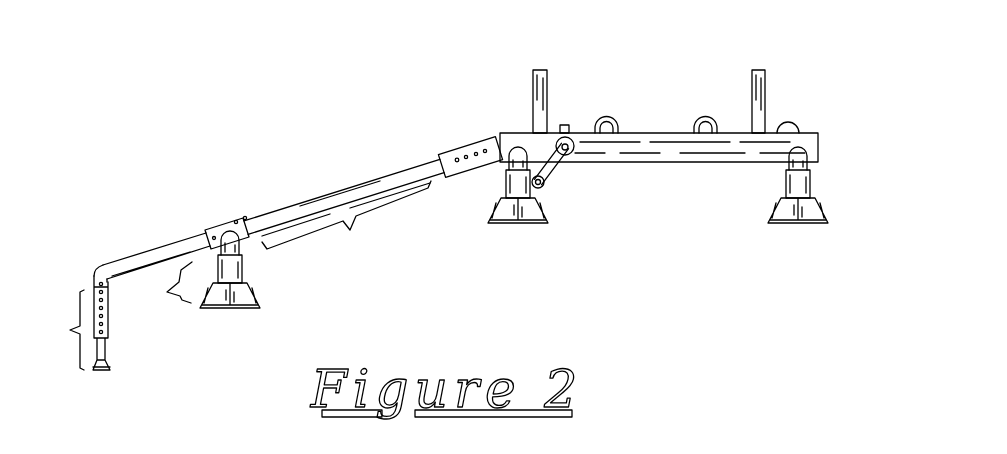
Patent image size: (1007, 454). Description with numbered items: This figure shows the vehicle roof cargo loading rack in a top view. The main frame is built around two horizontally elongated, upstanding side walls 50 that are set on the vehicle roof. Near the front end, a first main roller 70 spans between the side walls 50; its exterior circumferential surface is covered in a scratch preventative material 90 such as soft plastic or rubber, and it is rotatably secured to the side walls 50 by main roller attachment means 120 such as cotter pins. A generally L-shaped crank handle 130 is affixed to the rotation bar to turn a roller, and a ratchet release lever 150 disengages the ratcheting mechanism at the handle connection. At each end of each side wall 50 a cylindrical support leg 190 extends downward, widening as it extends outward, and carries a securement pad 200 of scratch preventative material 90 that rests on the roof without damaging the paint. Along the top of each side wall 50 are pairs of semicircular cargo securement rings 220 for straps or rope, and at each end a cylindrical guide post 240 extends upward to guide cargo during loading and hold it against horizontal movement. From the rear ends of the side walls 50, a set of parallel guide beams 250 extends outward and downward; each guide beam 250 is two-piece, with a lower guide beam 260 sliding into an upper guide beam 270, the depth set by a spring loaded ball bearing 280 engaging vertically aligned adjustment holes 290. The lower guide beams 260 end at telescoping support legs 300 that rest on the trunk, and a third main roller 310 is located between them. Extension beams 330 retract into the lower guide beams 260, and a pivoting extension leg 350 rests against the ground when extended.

The side wall 50 is at (687, 157).
The first main roller 70 is at (791, 128).
The scratch preventative material 90 is at (243, 305).
The main roller attachment means 120 is at (557, 160).
The crank handle 130 is at (542, 187).
The ratchet release lever 150 is at (564, 124).
The support leg 190 is at (811, 183).
The securement pad 200 is at (212, 310).
The cargo securement ring 220 is at (606, 117).
The guide post 240 is at (533, 70).
The guide beam 250 is at (346, 219).
The lower guide beam 260 is at (325, 197).
The upper guide beam 270 is at (464, 140).
The spring loaded ball bearing 280 is at (107, 338).
The adjustment holes 290 is at (489, 149).
The telescoping support leg 300 is at (163, 288).
The third main roller 310 is at (255, 240).
The extension beam 330 is at (153, 248).
The extension leg 350 is at (72, 323).